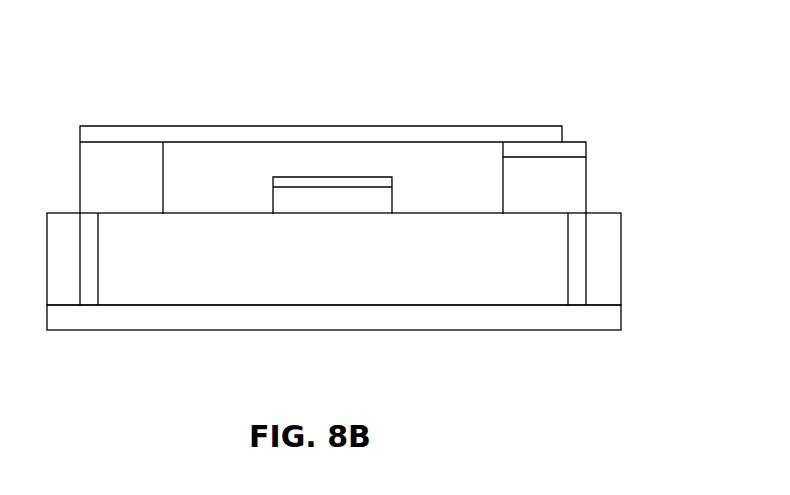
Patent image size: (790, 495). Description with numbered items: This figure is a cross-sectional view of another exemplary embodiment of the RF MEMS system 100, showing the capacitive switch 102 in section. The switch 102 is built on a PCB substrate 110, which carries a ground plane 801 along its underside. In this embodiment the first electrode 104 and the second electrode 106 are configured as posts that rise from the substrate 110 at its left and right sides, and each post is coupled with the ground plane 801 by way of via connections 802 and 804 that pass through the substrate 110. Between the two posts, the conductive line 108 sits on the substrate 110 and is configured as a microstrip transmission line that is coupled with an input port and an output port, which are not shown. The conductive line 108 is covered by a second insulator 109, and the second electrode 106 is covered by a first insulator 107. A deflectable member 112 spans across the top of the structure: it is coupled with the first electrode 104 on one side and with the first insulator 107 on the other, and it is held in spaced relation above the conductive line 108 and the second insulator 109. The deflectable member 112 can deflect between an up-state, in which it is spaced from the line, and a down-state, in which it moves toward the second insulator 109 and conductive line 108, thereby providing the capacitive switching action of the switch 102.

The RF MEMS system 100 is at (653, 102).
The capacitive switch 102 is at (152, 108).
The first electrode 104 is at (105, 190).
The second electrode 106 is at (528, 189).
The first insulator 107 is at (565, 141).
The conductive line 108 is at (322, 209).
The second insulator 109 is at (335, 176).
The substrate 110 is at (232, 280).
The deflectable member 112 is at (209, 126).
The ground plane 801 is at (322, 328).
The via connection 802 is at (99, 285).
The via connection 804 is at (568, 247).